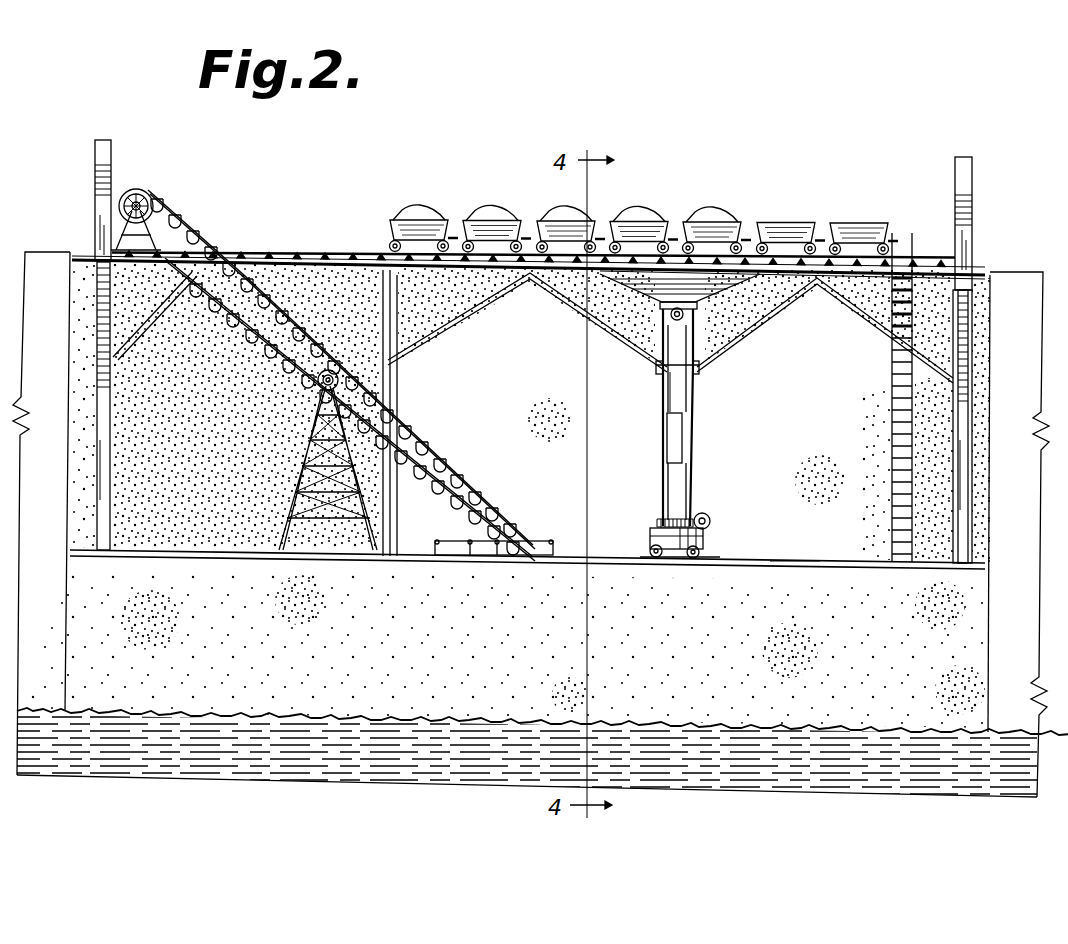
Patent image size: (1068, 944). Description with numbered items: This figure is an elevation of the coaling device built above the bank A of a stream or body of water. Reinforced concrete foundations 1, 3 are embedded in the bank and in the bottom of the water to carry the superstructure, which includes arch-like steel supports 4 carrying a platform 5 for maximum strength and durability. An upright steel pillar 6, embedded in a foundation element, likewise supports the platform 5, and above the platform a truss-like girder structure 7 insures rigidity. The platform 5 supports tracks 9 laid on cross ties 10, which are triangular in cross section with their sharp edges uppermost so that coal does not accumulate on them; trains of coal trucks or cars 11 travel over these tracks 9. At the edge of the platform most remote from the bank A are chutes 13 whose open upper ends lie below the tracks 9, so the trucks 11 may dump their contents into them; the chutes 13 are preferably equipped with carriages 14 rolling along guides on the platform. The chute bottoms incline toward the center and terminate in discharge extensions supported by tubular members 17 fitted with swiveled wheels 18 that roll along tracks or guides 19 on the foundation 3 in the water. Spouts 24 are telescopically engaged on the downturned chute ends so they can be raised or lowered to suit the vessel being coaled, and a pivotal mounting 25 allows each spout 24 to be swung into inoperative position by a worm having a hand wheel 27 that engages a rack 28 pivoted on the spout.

The reinforced concrete foundation 1 is at (78, 250).
The reinforced concrete foundation 3 is at (162, 549).
The steel supports 4 is at (150, 408).
The platform 5 is at (258, 248).
The upright steel pillar 6 is at (392, 390).
The truss like girder structure 7 is at (94, 187).
The tracks 9 is at (351, 247).
The cross ties 10 is at (305, 247).
The coal trucks or cars 11 is at (390, 222).
The chutes 13 is at (701, 342).
The carriages 14 is at (604, 284).
The tubular members 17 is at (666, 476).
The swiveled wheels 18 is at (696, 558).
The tracks or guides 19 is at (773, 560).
The spouts 24 is at (688, 443).
The pivotal mounting 25 is at (650, 535).
The hand wheel 27 is at (708, 520).
The rack 28 is at (652, 520).
The bank A is at (531, 524).